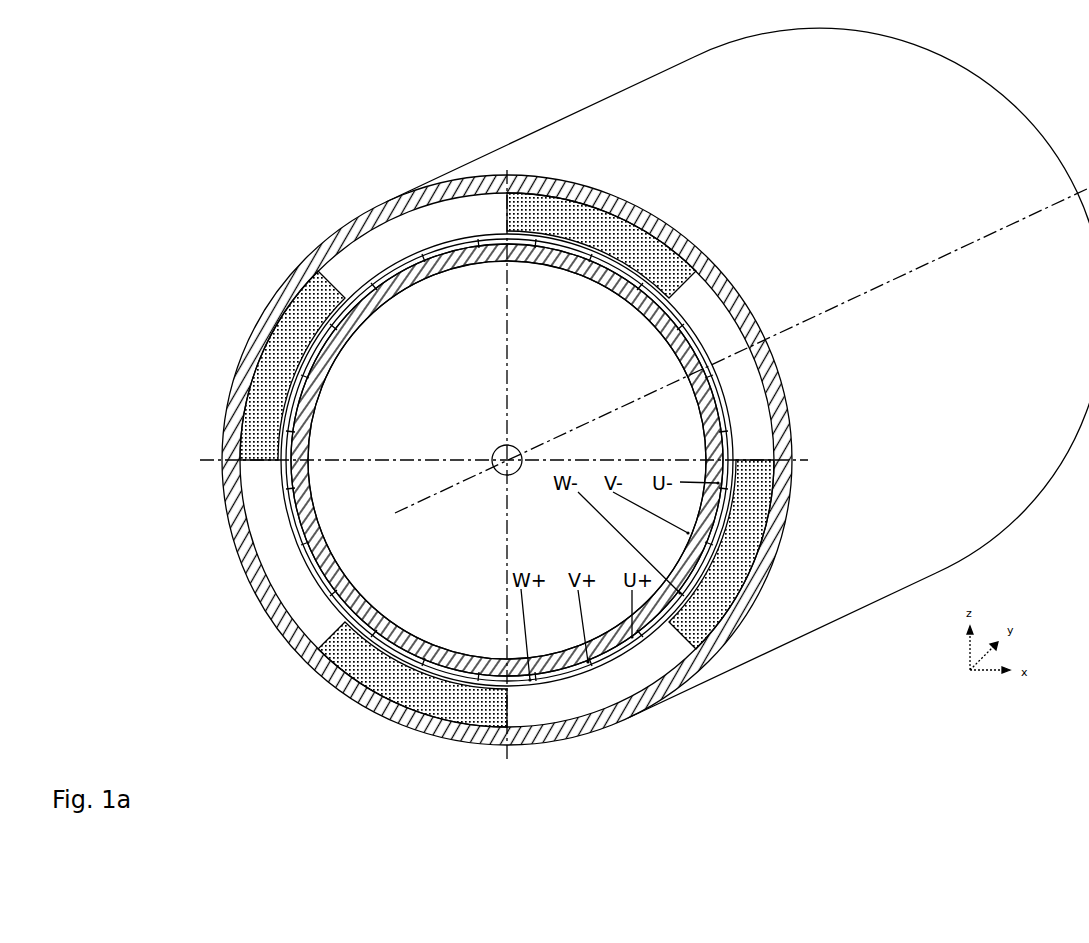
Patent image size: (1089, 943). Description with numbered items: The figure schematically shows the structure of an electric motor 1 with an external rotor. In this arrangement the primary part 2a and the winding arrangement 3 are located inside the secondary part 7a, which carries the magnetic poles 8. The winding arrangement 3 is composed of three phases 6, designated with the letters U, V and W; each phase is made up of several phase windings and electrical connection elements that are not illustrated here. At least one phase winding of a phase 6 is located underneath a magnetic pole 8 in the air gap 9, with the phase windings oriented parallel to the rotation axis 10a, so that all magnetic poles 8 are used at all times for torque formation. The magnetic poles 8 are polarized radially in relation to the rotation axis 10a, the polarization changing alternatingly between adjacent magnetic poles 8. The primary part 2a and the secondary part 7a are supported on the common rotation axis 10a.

The electric motor 1 is at (650, 125).
The secondary part 7a is at (360, 232).
The magnetic poles 8 is at (697, 282).
The winding arrangement 3 is at (550, 245).
The phases 6 is at (600, 258).
The rotation axis 10a is at (567, 430).
The air gap 9 is at (305, 458).
The primary part 2a is at (343, 588).